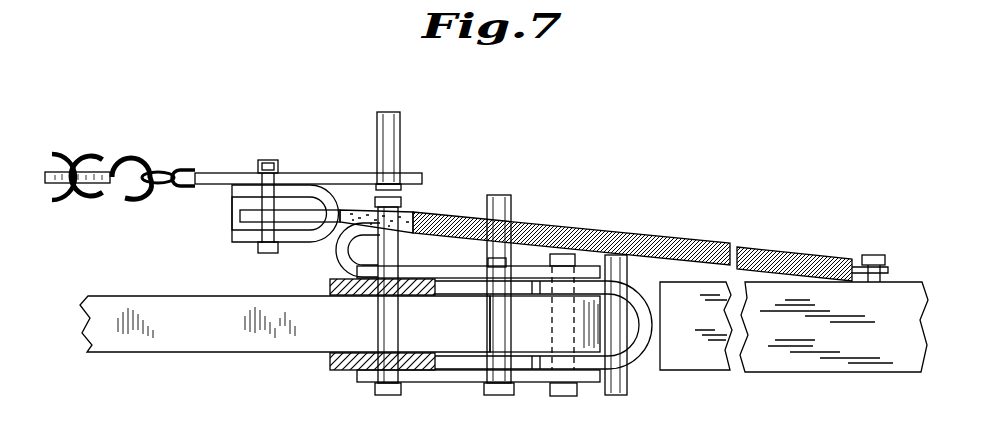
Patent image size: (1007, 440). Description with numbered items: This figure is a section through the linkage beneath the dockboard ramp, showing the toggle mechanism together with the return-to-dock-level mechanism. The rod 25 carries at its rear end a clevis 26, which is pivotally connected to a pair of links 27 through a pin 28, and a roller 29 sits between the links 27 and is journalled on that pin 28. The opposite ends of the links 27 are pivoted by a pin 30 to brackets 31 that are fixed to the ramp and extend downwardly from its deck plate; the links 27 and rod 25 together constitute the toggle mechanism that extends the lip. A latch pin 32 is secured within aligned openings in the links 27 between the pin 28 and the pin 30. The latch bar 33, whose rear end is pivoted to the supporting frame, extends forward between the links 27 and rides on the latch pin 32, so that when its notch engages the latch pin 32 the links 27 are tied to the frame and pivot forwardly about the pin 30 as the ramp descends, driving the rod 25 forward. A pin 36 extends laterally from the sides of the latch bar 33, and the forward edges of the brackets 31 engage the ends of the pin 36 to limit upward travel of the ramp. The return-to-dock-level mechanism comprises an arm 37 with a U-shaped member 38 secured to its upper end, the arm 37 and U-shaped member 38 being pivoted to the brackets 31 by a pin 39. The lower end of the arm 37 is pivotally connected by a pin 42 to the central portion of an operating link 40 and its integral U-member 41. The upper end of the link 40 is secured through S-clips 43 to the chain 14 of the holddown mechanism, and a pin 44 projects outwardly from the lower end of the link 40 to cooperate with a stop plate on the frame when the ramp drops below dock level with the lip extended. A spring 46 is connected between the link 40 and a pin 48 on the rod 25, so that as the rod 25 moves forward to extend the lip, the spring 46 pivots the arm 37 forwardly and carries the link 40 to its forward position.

The chain 14 is at (180, 168).
The rod 25 is at (820, 360).
The clevis 26 is at (635, 352).
The links 27 is at (463, 273).
The pin 28 is at (570, 398).
The roller 29 is at (540, 333).
The pin 30 is at (392, 397).
The brackets 31 is at (348, 353).
The latch pin 32 is at (509, 196).
The latch bar 33 is at (182, 340).
The pin 36 is at (618, 390).
The arm 37 is at (240, 214).
The U-shaped member 38 is at (345, 253).
The pin 39 is at (399, 203).
The operating link 40 is at (311, 173).
The U-member 41 is at (327, 207).
The pin 42 is at (268, 160).
The S-clips 43 is at (50, 160).
The pin 44 is at (387, 112).
The spring 46 is at (764, 245).
The pin 48 is at (880, 255).